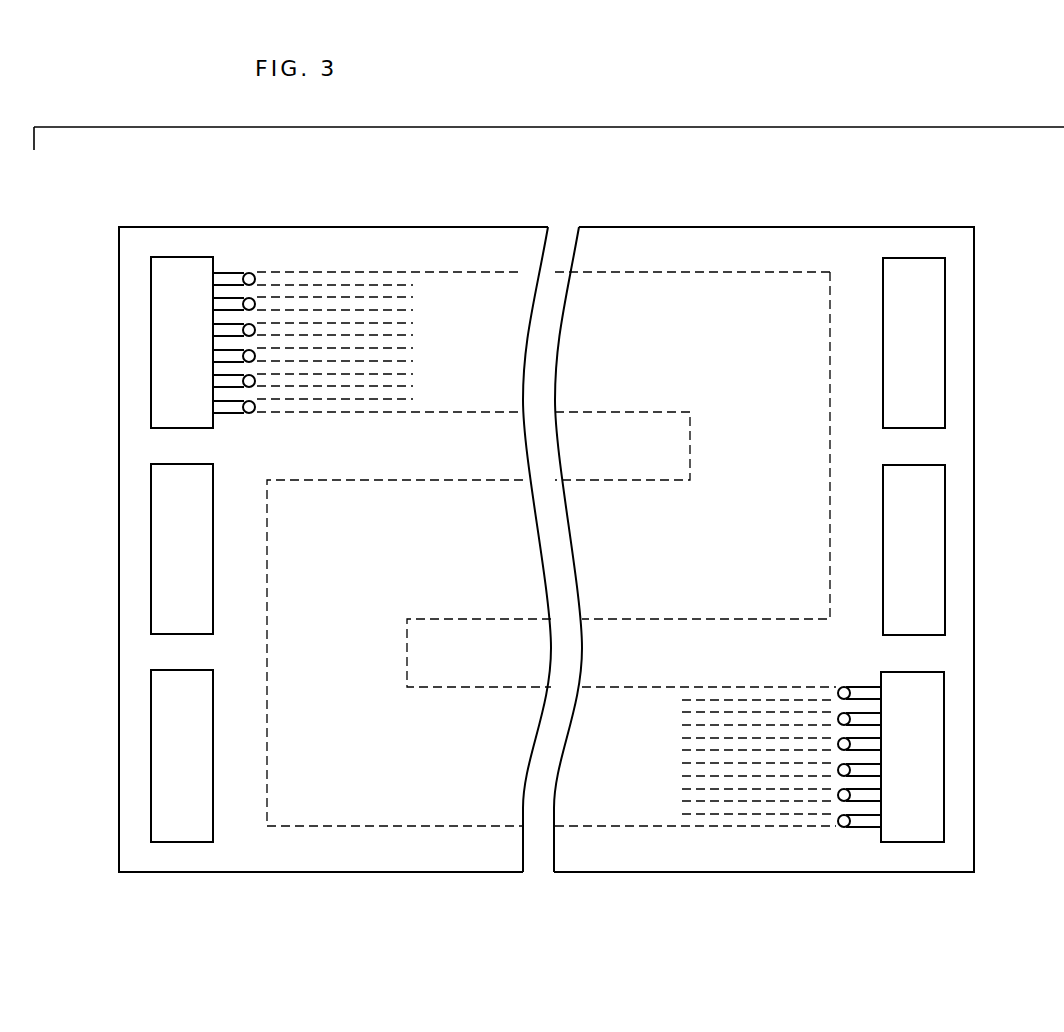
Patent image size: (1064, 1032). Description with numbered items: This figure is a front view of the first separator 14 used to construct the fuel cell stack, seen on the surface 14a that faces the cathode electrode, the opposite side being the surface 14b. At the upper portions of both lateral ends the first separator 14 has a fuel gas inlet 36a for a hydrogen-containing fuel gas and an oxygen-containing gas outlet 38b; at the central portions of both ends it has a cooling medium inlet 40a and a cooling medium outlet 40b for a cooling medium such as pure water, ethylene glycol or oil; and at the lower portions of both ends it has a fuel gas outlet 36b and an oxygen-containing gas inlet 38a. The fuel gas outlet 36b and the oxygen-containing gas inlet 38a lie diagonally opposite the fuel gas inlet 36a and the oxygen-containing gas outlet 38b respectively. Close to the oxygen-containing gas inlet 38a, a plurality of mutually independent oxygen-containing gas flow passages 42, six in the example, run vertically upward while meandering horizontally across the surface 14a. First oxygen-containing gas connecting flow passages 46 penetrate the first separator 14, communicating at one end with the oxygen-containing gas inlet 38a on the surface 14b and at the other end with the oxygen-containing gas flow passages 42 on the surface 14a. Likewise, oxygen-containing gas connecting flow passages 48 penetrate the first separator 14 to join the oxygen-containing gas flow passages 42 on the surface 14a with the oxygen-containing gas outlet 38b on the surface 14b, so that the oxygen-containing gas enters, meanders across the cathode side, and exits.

The first separator 14 is at (678, 212).
The surface 14a is at (471, 245).
The surface 14b is at (790, 248).
The fuel gas inlet 36a is at (928, 356).
The fuel gas outlet 36b is at (178, 751).
The oxygen-containing gas inlet 38a is at (928, 760).
The oxygen-containing gas outlet 38b is at (178, 352).
The cooling medium inlet 40a is at (928, 558).
The cooling medium outlet 40b is at (178, 550).
The oxygen-containing gas flow passages 42 is at (733, 822).
The first oxygen-containing gas connecting flow passages 46 is at (871, 742).
The oxygen-containing gas connecting flow passages 48 is at (222, 307).